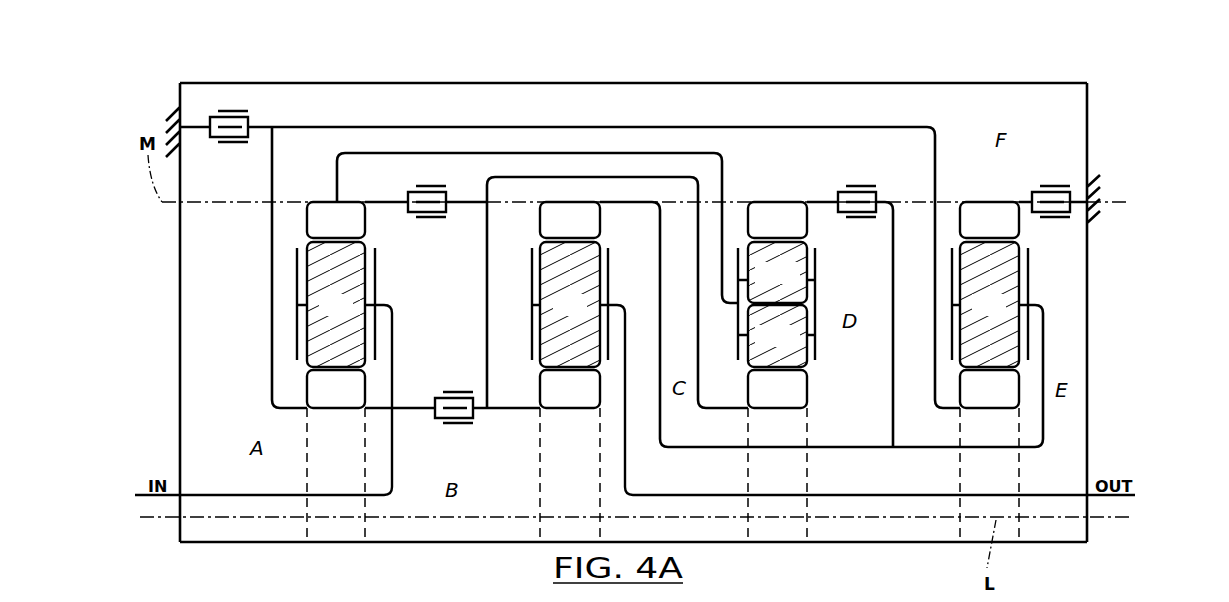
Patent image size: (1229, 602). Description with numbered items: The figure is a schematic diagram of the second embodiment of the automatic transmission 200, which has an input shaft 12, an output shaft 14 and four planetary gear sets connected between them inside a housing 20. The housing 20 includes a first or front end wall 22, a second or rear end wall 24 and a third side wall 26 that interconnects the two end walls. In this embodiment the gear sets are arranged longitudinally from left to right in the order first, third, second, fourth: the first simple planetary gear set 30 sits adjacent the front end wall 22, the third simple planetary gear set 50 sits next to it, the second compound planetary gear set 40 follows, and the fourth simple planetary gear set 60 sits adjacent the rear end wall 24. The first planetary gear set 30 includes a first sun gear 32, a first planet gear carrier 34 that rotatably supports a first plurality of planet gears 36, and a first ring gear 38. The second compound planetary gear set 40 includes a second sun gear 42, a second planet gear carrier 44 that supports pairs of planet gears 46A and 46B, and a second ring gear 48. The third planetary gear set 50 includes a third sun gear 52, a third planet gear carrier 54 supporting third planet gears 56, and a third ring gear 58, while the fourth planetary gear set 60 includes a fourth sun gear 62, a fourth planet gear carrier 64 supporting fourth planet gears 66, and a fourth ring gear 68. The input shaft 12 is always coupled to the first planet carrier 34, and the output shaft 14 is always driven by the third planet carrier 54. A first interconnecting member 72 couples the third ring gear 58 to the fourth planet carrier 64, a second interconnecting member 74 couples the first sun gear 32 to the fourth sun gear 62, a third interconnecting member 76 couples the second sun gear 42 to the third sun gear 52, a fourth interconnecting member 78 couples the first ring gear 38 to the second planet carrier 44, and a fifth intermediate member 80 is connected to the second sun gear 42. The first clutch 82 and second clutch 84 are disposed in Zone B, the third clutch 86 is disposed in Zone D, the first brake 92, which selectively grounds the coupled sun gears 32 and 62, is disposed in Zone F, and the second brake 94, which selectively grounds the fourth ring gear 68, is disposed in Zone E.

The input shaft 12 is at (140, 497).
The output shaft 14 is at (1100, 497).
The housing 20 is at (752, 68).
The first or front end wall 22 is at (180, 328).
The second or rear end wall 24 is at (1087, 342).
The third side wall 26 is at (592, 83).
The first simple planetary gear set 30 is at (286, 348).
The first sun gear 32 is at (324, 399).
The first planet gear carrier 34 is at (378, 256).
The first plurality of pinion or planet gears 36 is at (324, 314).
The first ring gear 38 is at (324, 230).
The second compound planetary gear set 40 is at (838, 350).
The second sun gear 42 is at (765, 399).
The second planet gear carrier 44 is at (738, 335).
The pinion or planet gear 46A is at (760, 282).
The pinion or planet gear 46B is at (760, 345).
The second ring gear 48 is at (765, 230).
The third simple planetary gear set 50 is at (500, 345).
The third sun gear 52 is at (558, 399).
The third planet gear carrier 54 is at (612, 270).
The third plurality of pinion or planet gears 56 is at (558, 314).
The third ring gear 58 is at (558, 230).
The fourth simple planetary gear set 60 is at (1052, 284).
The fourth sun gear 62 is at (977, 399).
The fourth planet gear carrier 64 is at (1030, 264).
The fourth plurality of pinion or planet gears 66 is at (977, 314).
The fourth ring gear 68 is at (977, 230).
The first shaft, quill or interconnecting member 72 is at (1046, 422).
The second shaft, quill or interconnecting member 74 is at (532, 127).
The third shaft, quill or interconnecting member 76 is at (698, 275).
The fourth shaft, quill or interconnecting member 78 is at (450, 153).
The fifth shaft, quill or intermediate member 80 is at (500, 410).
The first clutch 82 is at (452, 392).
The second clutch 84 is at (412, 188).
The third clutch 86 is at (860, 186).
The first brake 92 is at (238, 111).
The second brake 94 is at (1052, 186).
The automatic transmission 200 is at (1122, 104).